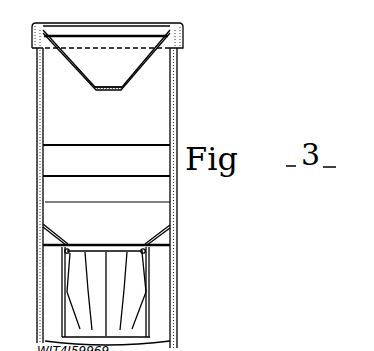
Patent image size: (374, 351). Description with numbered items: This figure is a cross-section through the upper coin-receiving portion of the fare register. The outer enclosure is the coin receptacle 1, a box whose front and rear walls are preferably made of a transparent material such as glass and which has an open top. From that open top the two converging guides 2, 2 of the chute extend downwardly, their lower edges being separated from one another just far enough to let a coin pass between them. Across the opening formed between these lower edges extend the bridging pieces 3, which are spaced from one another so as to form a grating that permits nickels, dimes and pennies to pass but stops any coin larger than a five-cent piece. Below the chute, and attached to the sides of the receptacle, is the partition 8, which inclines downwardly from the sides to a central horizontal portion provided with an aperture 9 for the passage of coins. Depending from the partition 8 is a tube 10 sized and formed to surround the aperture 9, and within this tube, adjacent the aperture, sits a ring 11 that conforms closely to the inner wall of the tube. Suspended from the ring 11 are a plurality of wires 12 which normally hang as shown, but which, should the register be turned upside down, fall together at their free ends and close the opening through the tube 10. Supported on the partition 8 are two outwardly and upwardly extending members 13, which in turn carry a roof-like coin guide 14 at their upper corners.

The coin receptacle 1 is at (114, 185).
The converging guides of the chute 2 is at (92, 82).
The bridging pieces 3 is at (112, 92).
The partition 8 is at (106, 230).
The aperture 9 is at (88, 245).
The tube 10 is at (150, 305).
The ring 11 is at (138, 249).
The wires 12 is at (84, 292).
The outwardly and upwardly extending members 13 is at (170, 193).
The roof-like coin guide 14 is at (133, 146).